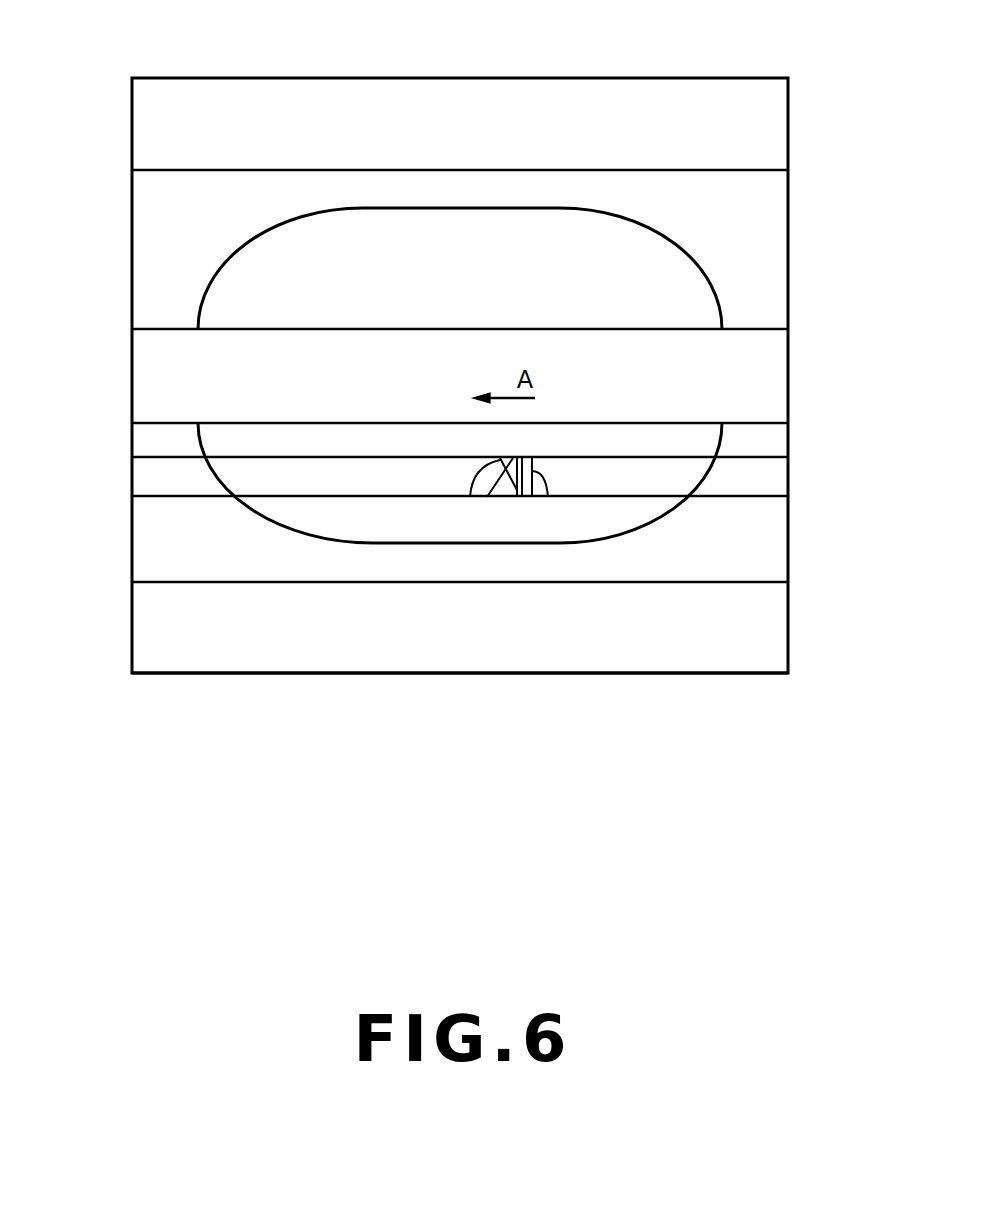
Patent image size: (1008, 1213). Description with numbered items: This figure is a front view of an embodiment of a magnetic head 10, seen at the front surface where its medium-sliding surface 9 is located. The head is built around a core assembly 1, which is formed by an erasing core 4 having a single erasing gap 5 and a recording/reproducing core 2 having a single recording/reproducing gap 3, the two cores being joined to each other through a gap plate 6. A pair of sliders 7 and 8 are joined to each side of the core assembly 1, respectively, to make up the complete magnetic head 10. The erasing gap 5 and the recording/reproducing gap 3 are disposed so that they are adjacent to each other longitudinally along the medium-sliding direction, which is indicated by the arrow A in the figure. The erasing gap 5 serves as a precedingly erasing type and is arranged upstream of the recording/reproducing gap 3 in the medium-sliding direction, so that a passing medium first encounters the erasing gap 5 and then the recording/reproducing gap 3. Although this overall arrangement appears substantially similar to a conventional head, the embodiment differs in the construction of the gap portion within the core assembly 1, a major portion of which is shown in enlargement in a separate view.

The core assembly 1 is at (790, 475).
The recording/reproducing core 2 is at (145, 470).
The recording/reproducing gap 3 is at (475, 497).
The erasing core 4 is at (750, 490).
The erasing gap 5 is at (548, 497).
The gap plate 6 is at (510, 497).
The slider 7 is at (335, 657).
The slider 8 is at (488, 90).
The medium-sliding surface 9 is at (707, 317).
The magnetic head 10 is at (595, 686).